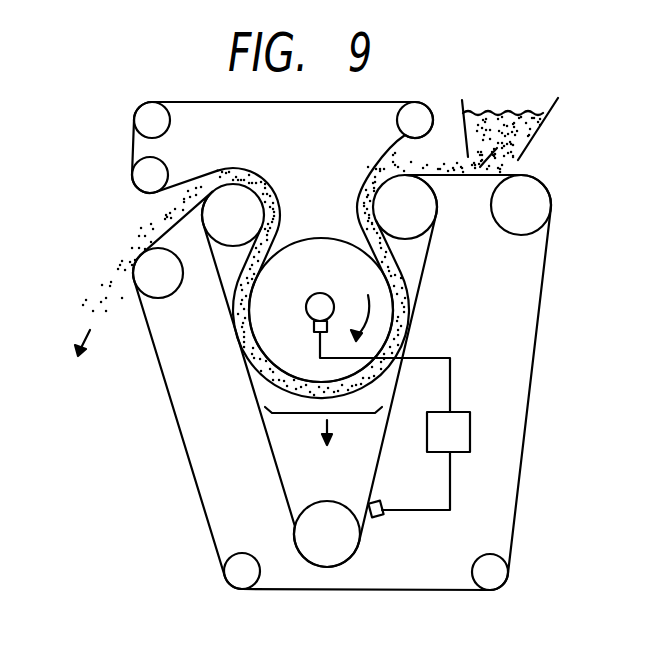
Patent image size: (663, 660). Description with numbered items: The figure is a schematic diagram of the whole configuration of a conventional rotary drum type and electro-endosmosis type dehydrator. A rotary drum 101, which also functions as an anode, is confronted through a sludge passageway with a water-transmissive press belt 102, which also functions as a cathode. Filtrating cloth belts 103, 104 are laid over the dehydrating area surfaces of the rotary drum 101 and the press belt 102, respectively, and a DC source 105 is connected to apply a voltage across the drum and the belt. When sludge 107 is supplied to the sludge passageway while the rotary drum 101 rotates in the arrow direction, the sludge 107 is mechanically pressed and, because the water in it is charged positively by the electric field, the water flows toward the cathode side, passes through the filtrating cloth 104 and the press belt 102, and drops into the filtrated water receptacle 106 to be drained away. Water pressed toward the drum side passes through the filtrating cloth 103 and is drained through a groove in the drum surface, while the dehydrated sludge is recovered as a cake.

The rotary drum 101 is at (318, 253).
The press belt 102 is at (422, 277).
The filtrating cloth belt 103 is at (133, 143).
The filtrating cloth belt 104 is at (543, 302).
The DC source 105 is at (470, 452).
The filtrated water receptacle 106 is at (300, 418).
The sludge 107 is at (522, 113).